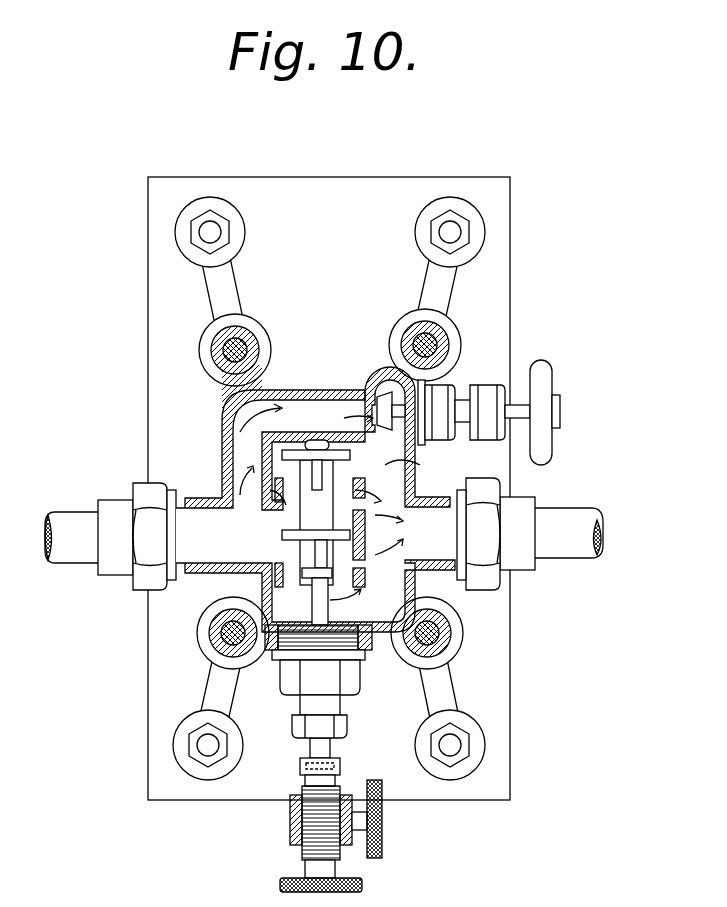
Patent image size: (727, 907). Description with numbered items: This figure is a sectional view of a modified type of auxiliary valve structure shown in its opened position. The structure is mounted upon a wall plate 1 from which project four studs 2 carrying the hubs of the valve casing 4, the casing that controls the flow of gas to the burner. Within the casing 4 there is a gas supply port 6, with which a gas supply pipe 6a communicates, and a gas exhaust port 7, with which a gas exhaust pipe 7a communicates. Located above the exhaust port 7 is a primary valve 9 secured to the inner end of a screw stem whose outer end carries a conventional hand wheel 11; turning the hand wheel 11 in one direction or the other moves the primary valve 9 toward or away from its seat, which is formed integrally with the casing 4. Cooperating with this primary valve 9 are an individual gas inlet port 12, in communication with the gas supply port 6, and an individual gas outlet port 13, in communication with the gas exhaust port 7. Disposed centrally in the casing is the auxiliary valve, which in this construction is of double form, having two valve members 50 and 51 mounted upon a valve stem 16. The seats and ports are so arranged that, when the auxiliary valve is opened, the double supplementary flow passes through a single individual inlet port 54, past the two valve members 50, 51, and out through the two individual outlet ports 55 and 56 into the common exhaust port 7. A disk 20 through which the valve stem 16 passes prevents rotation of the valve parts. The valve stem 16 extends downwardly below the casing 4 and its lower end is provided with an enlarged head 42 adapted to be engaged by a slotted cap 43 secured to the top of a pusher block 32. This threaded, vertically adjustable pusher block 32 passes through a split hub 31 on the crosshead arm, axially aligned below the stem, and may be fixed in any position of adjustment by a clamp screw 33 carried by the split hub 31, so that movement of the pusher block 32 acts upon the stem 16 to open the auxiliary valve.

The wall plate 1 is at (140, 706).
The studs 2 is at (215, 349).
The valve casing 4 is at (333, 390).
The gas supply port 6 is at (225, 535).
The gas supply pipe 6a is at (115, 536).
The gas exhaust port 7 is at (410, 533).
The gas exhaust pipe 7a is at (530, 534).
The primary valve 9 is at (391, 411).
The hand wheel 11 is at (545, 444).
The individual gas inlet port 12 is at (298, 416).
The individual gas outlet port 13 is at (405, 478).
The valve stem 16 is at (312, 607).
The disk 20 is at (305, 638).
The split hub 31 is at (292, 818).
The pusher block 32 is at (335, 868).
The clamp screw 33 is at (384, 822).
The enlarged head 42 is at (300, 768).
The slotted cap 43 is at (341, 765).
The valve member 50 is at (350, 456).
The valve member 51 is at (350, 538).
The individual inlet port 54 is at (284, 518).
The individual outlet port 55 is at (366, 500).
The individual outlet port 56 is at (366, 576).